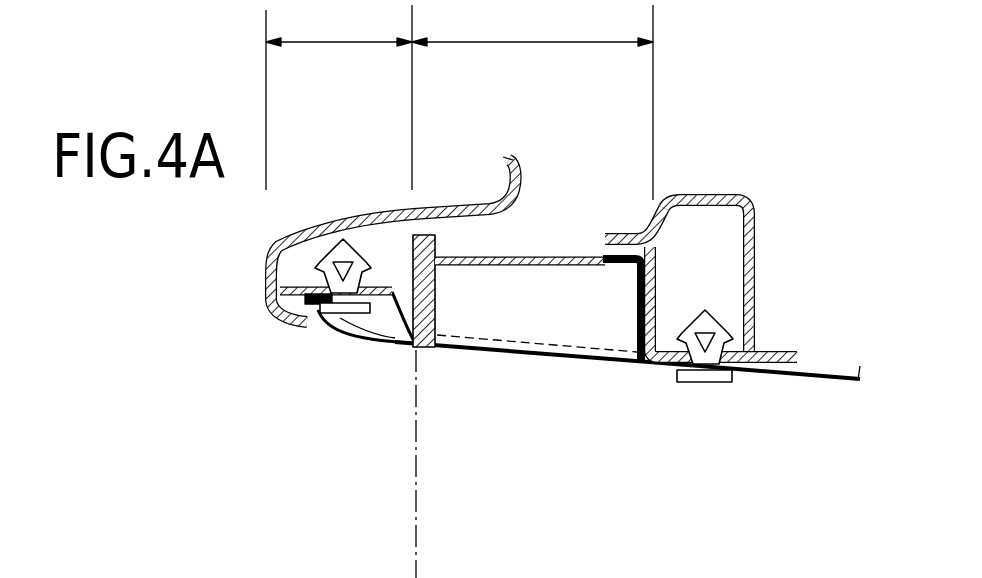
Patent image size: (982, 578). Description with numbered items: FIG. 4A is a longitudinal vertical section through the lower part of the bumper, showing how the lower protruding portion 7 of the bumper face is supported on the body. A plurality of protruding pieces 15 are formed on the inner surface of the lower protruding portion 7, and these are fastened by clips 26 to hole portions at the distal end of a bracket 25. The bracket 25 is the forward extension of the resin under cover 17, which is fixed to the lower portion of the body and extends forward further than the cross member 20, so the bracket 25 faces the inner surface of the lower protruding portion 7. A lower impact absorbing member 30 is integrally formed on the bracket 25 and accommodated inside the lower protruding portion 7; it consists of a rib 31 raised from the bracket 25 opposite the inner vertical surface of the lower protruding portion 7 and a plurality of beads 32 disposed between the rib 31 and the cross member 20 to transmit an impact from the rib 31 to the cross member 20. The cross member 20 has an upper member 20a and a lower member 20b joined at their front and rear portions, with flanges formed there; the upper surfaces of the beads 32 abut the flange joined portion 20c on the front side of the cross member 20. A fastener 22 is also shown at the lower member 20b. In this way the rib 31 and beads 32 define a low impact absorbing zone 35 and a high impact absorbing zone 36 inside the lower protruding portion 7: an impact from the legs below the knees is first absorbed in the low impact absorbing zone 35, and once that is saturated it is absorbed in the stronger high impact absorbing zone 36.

The lower protruding portion 7 is at (283, 237).
The protruding pieces 15 is at (333, 243).
The under cover 17 is at (826, 386).
The cross member 20 is at (765, 180).
The upper member 20a is at (757, 236).
The lower member 20b is at (656, 370).
The flange joined portion 20c is at (640, 231).
The clip 22 is at (720, 386).
The bracket 25 is at (560, 363).
The clips 26 is at (336, 333).
The lower impact absorbing member 30 is at (551, 224).
The rib 31 is at (446, 318).
The beads 32 is at (598, 267).
The low impact absorbing zone 35 is at (339, 97).
The high impact absorbing zone 36 is at (532, 102).